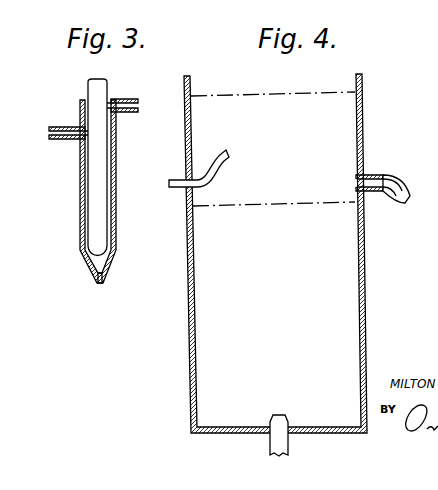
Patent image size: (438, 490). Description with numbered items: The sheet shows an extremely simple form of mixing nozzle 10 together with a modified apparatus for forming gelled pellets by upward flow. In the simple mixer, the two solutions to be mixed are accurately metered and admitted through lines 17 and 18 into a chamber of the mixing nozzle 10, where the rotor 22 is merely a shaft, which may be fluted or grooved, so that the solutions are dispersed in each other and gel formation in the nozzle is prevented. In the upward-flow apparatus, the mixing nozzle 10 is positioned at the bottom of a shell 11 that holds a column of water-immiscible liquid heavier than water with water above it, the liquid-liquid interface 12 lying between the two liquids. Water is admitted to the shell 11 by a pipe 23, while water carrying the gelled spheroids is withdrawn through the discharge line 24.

In FIG. 3, the mixing nozzle 10 is at (118, 173).
In FIG. 4, the mixing nozzle 10 is at (269, 450).
In FIG. 4, the shell 11 is at (365, 269).
In FIG. 4, the liquid-liquid interface 12 is at (333, 203).
In FIG. 3, the line 17 is at (137, 99).
In FIG. 3, the line 18 is at (49, 132).
In FIG. 3, the rotor 22 is at (96, 230).
In FIG. 4, the pipe 23 is at (170, 189).
In FIG. 4, the discharge line 24 is at (399, 189).